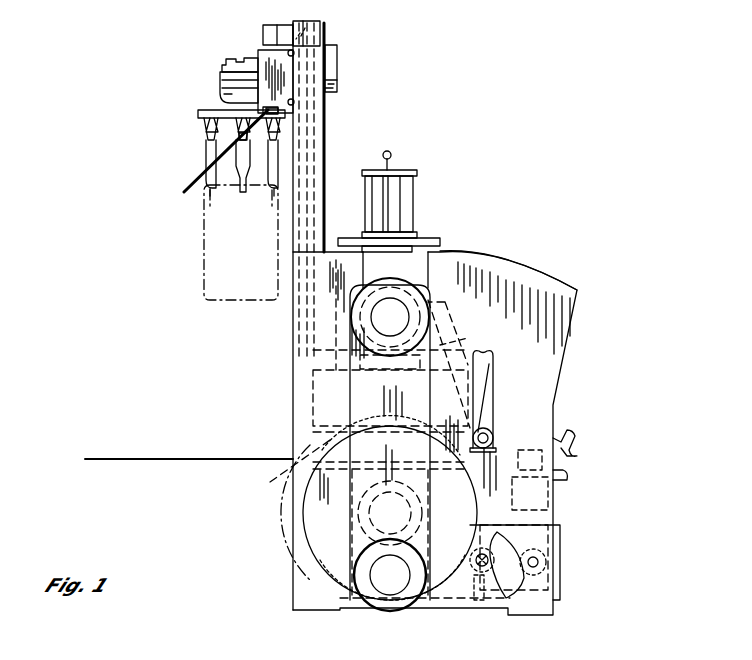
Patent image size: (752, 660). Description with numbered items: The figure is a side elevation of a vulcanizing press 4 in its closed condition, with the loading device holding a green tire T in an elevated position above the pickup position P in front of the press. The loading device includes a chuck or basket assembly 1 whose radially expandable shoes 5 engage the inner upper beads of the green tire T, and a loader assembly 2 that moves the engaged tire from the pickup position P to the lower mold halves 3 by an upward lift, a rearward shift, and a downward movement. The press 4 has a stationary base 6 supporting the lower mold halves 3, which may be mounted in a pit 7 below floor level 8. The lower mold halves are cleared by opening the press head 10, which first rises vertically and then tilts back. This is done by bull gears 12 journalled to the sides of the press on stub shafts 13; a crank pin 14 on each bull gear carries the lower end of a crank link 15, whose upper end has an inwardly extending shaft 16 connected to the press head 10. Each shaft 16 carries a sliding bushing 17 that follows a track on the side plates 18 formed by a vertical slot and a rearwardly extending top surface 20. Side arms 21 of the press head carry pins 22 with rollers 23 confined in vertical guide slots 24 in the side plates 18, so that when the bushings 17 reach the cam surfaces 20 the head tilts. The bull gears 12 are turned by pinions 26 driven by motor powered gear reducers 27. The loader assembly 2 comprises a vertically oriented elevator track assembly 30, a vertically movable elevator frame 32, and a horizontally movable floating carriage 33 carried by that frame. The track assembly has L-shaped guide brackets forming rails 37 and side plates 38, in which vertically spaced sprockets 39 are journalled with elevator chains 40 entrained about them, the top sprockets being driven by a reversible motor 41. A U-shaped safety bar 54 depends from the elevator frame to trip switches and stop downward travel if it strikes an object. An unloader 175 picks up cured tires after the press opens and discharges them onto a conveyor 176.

The chuck or basket assembly 1 is at (186, 128).
The loader assembly 2 is at (205, 76).
The lower mold halves 3 is at (292, 467).
The vulcanizing press 4 is at (567, 368).
The shoes 5 is at (205, 162).
The stationary base 6 is at (312, 576).
The pit 7 is at (296, 551).
The floor level 8 is at (90, 459).
The press head 10 is at (402, 258).
The bull gear 12 is at (440, 565).
The stub shaft 13 is at (376, 513).
The crank pin 14 is at (387, 583).
The crank link 15 is at (363, 400).
The shaft 16 is at (393, 318).
The sliding bushing 17 is at (449, 314).
The side plates 18 is at (337, 322).
The rearwardly extending top surface 20 is at (522, 272).
The side arms 21 is at (456, 336).
The pins 22 is at (494, 438).
The rollers 23 is at (482, 436).
The vertical guide slots 24 is at (487, 375).
The pinions 26 is at (486, 580).
The motor powered gear reducers 27 is at (543, 540).
The elevator track assembly 30 is at (335, 107).
The elevator frame 32 is at (257, 50).
The floating carriage 33 is at (218, 62).
The rails 37 is at (293, 303).
The side plates 38 is at (322, 151).
The sprockets 39 is at (305, 38).
The elevator chains 40 is at (322, 119).
The reversible motor 41 is at (283, 22).
The safety bar 54 is at (190, 183).
The unloader 175 is at (576, 450).
The conveyor 176 is at (575, 478).
The green tire T is at (205, 237).
The pickup position P is at (245, 455).